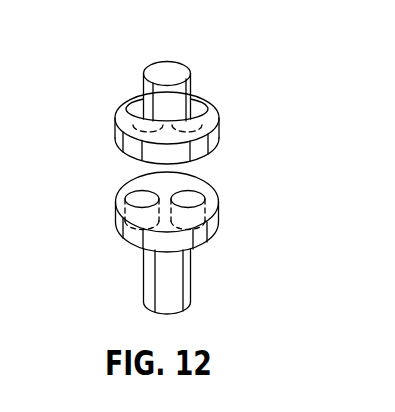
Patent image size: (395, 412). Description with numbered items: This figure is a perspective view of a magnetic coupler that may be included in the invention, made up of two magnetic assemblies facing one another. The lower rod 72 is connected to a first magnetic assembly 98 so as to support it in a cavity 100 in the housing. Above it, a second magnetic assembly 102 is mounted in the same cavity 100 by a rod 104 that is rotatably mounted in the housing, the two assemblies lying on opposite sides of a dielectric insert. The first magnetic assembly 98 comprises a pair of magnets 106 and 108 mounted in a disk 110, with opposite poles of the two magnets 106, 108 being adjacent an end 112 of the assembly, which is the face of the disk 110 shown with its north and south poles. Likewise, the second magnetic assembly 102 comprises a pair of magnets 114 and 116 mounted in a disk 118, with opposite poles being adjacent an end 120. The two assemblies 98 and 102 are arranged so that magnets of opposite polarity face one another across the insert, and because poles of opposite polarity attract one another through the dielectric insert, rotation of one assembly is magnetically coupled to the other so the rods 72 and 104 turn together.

The rod 72 is at (192, 278).
The first magnetic assembly 98 is at (104, 243).
The cavity 100 is at (137, 95).
The second magnetic assembly 102 is at (104, 84).
The rod 104 is at (192, 82).
The magnet 106 is at (120, 207).
The magnet 108 is at (205, 206).
The disk 110 is at (208, 245).
The end 112 is at (140, 180).
The magnet 114 is at (125, 117).
The magnet 116 is at (218, 112).
The disk 118 is at (220, 131).
The end 120 is at (208, 155).